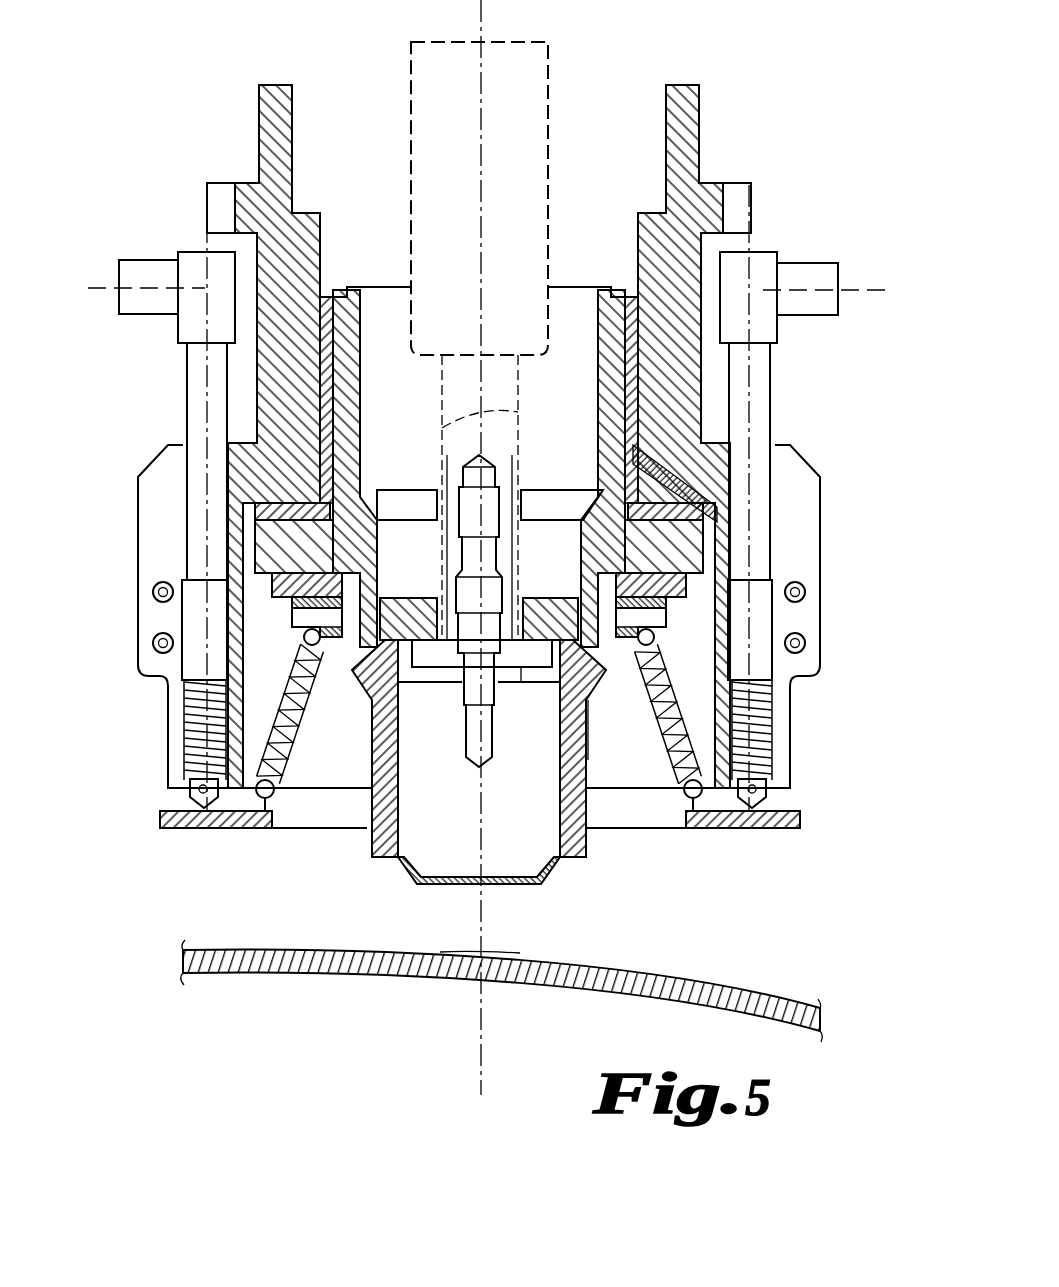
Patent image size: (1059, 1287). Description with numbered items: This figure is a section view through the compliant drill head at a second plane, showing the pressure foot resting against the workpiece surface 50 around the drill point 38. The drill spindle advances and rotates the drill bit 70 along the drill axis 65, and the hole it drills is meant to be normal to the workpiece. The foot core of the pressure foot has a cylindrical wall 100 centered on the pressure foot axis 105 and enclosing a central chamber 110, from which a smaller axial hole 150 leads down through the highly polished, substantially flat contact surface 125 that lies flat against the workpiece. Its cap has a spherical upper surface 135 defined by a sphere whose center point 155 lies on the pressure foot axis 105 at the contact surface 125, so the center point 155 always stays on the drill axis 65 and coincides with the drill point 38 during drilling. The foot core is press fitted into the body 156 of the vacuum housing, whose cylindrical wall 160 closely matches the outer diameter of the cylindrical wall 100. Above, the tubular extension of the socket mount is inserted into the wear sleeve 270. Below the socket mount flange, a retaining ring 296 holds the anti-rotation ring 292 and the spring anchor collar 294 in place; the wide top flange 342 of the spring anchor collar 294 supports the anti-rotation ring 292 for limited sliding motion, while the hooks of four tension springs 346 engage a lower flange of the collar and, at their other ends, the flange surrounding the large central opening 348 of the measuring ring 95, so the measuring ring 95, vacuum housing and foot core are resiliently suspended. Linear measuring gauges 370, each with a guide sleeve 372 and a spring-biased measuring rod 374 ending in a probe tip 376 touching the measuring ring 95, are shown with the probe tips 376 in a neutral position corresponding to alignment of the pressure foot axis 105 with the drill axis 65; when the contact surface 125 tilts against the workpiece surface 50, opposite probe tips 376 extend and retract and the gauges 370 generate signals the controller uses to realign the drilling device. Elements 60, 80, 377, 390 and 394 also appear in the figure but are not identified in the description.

The drill point 38 is at (481, 955).
The workpiece surface 50 is at (770, 993).
The ram rod 60 is at (548, 181).
The drill axis 65 is at (483, 145).
The drill bit 70 is at (487, 742).
The die bottom 80 is at (414, 889).
The measuring ring 95 is at (805, 818).
The cylindrical wall 100 is at (529, 778).
The pressure foot axis 105 is at (552, 863).
The central chamber 110 is at (452, 811).
The contact surface 125 is at (538, 900).
The spherical upper surface 135 is at (386, 627).
The smaller axial hole 150 is at (463, 887).
The center point 155 is at (483, 876).
The body 156 is at (362, 705).
The cylindrical wall 160 is at (370, 833).
The wear sleeve 270 is at (601, 402).
The anti-rotation ring 292 is at (615, 584).
The spring anchor collar 294 is at (594, 609).
The retaining ring 296 is at (525, 668).
The top flange 342 is at (293, 622).
The tension springs 346 is at (293, 765).
The central opening 348 is at (684, 818).
The linear measuring gauge 370 is at (483, 463).
The guide sleeve 372 is at (187, 400).
The measuring rod 374 is at (195, 790).
The probe tip 376 is at (185, 805).
The spring end 377 is at (640, 727).
The anvil plate 390 is at (412, 682).
The spring bracket 394 is at (653, 616).